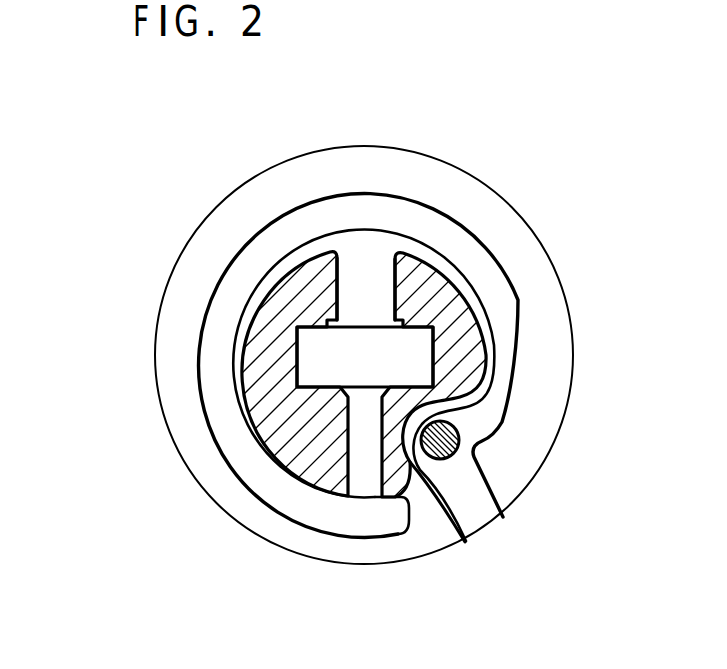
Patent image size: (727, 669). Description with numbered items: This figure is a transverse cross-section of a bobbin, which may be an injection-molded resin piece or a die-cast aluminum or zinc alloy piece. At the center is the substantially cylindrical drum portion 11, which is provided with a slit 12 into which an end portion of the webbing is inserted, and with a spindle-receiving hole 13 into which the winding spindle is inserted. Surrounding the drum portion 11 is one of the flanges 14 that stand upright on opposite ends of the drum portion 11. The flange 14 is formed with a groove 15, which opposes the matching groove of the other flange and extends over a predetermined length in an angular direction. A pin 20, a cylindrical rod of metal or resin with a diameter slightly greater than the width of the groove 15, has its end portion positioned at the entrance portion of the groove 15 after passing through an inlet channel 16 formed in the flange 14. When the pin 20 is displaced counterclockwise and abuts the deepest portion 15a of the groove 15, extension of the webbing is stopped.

The drum portion 11 is at (283, 433).
The slit 12 is at (361, 262).
The spindle-receiving hole 13 is at (377, 373).
The flange 14 is at (168, 284).
The groove 15 is at (474, 268).
The deepest portion of the groove 15a is at (402, 512).
The inlet channel 16 is at (472, 503).
The pin 20 is at (458, 431).